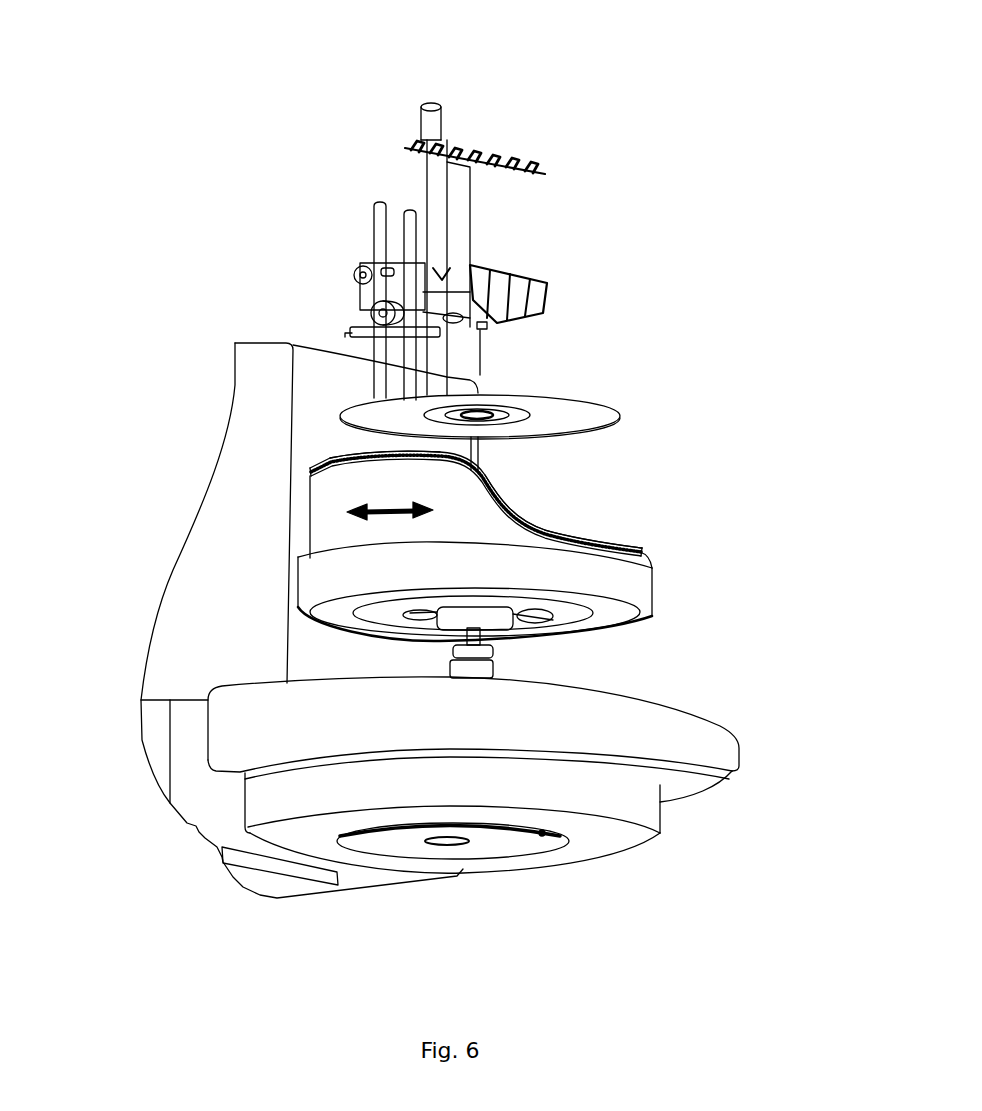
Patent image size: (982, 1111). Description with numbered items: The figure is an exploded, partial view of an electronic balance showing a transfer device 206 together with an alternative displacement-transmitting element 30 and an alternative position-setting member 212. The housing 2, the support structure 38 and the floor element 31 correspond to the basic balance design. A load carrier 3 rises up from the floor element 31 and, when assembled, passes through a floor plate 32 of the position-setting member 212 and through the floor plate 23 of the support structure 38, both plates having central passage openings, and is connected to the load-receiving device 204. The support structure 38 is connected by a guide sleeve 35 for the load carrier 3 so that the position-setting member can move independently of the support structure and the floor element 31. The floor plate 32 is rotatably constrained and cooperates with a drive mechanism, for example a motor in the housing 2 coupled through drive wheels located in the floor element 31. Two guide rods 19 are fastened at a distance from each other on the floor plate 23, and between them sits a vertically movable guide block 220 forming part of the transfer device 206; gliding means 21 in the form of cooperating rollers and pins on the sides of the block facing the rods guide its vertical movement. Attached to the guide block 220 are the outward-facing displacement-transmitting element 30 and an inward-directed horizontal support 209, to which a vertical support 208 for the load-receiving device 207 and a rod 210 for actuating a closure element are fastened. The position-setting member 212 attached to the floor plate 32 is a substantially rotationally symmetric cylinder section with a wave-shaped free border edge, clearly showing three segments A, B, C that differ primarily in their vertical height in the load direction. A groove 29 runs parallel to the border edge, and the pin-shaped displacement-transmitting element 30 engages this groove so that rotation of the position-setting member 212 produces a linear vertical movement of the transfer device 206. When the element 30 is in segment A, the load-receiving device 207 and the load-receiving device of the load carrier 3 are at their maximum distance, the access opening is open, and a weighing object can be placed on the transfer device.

The housing 2 is at (208, 662).
The load carrier 3 is at (483, 640).
The guide rods 19 is at (410, 230).
The gliding means 21 is at (353, 268).
The floor plate of the support structure 23 is at (570, 425).
The groove 29 is at (310, 463).
The displacement-transmitting element 30 is at (353, 333).
The floor element 31 is at (642, 735).
The floor plate of the position-setting member 32 is at (612, 617).
The guide sleeve 35 is at (467, 667).
The support structure 38 is at (630, 397).
The load-receiving device 204 is at (517, 277).
The transfer device 206 is at (328, 296).
The load-receiving device 207 is at (510, 157).
The vertical support 208 is at (450, 208).
The horizontal support 209 is at (420, 283).
The rod 210 is at (428, 177).
The position-setting member 212 is at (333, 522).
The guide block 220 is at (357, 282).
The segment A is at (343, 445).
The segment B is at (505, 488).
The segment C is at (597, 529).